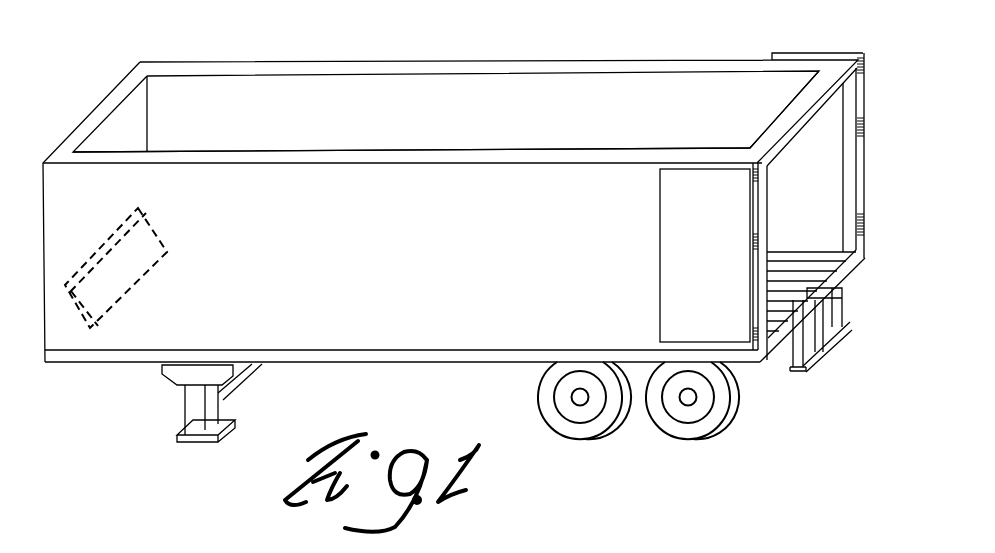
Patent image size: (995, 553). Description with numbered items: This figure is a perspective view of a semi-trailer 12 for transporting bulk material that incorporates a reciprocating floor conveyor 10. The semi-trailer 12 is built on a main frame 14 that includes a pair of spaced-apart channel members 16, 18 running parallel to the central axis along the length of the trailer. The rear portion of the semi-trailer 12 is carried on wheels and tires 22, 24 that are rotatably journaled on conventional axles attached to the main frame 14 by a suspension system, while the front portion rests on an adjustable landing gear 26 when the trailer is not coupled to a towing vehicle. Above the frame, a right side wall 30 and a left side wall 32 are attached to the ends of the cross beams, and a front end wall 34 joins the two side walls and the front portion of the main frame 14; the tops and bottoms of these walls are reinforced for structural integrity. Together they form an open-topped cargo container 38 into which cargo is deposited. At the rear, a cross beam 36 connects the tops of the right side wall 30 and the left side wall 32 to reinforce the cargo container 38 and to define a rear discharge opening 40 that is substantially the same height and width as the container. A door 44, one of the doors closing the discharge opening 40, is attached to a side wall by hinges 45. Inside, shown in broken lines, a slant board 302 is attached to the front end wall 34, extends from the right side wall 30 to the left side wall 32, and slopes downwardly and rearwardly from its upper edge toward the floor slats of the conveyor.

The reciprocating floor conveyor 10 is at (814, 246).
The semi-trailer 12 is at (423, 369).
The main frame 14 is at (853, 273).
The channel member 16 is at (818, 317).
The channel member 18 is at (783, 343).
The wheels and tires 22 is at (602, 426).
The wheels and tires 24 is at (731, 407).
The adjustable landing gear 26 is at (197, 408).
The right side wall 30 is at (567, 62).
The left side wall 32 is at (320, 333).
The front end wall 34 is at (113, 97).
The cross beam 36 is at (787, 110).
The cargo container 38 is at (396, 96).
The rear discharge opening 40 is at (845, 173).
The door 44 is at (660, 218).
The hinges 45 is at (863, 63).
The slant board 302 is at (168, 250).